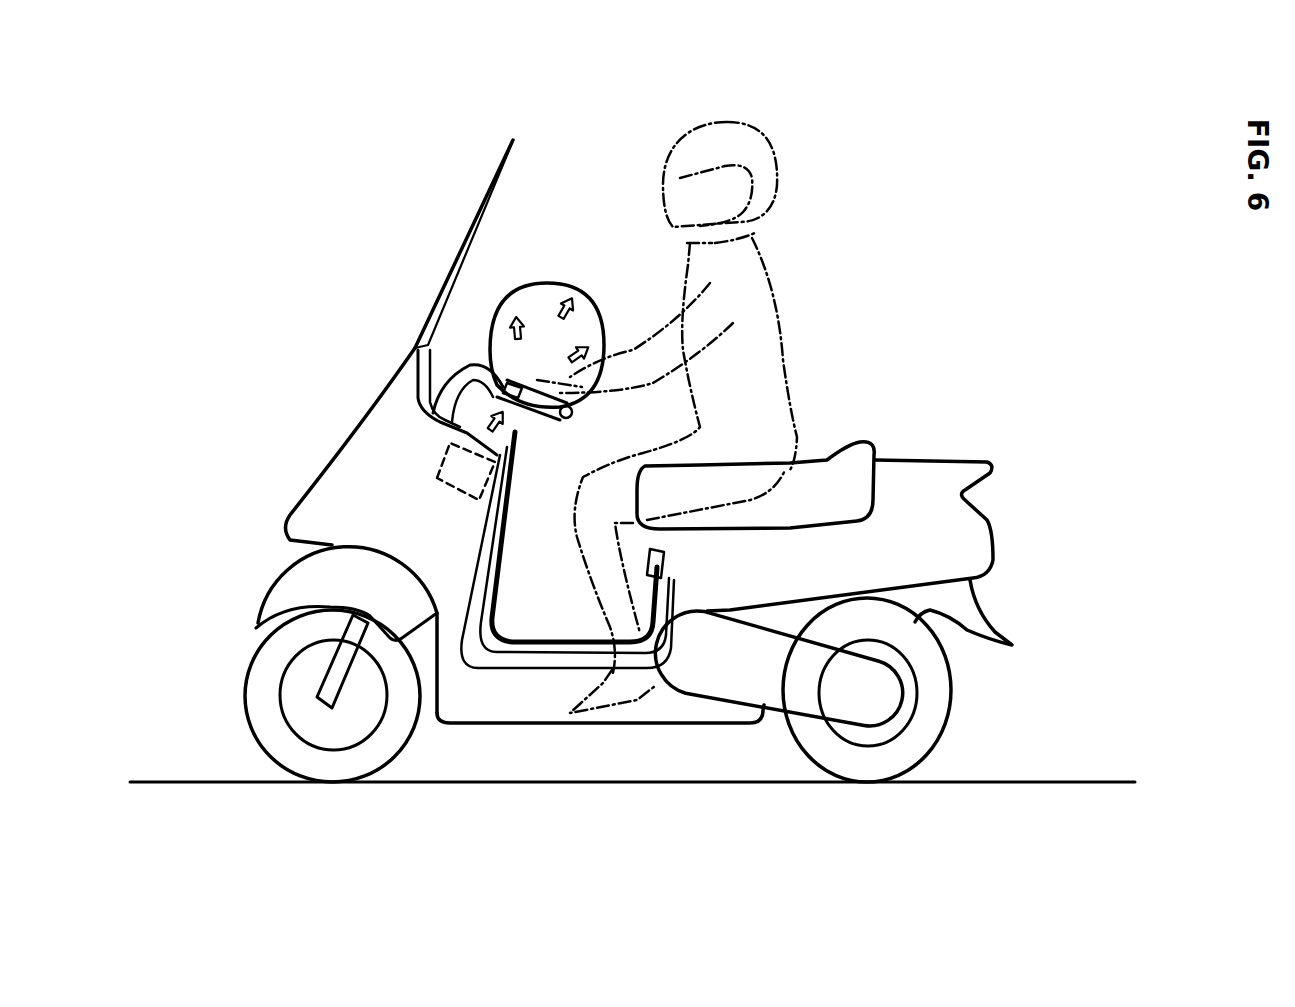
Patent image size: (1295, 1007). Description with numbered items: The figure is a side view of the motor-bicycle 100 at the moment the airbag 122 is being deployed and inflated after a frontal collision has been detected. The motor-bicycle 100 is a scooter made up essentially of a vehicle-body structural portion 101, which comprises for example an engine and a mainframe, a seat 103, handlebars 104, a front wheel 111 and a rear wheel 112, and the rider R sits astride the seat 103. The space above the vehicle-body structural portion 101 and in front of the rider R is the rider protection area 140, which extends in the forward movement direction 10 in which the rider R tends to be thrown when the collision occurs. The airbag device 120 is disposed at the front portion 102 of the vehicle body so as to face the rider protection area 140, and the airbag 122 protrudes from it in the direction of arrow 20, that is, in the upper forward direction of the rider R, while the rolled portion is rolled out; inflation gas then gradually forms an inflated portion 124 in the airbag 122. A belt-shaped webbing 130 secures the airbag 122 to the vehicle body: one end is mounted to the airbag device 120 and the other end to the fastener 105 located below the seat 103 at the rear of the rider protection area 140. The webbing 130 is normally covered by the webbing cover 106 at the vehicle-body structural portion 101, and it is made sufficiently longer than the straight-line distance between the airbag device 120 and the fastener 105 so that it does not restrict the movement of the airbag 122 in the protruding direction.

The forward movement direction 10 is at (696, 80).
The deployment direction of the airbag 20 is at (568, 203).
The motor-bicycle 100 is at (888, 267).
The vehicle-body structural portion 101 is at (701, 738).
The front portion of the vehicle body 102 is at (417, 437).
The seat 103 is at (880, 437).
The handlebars 104 is at (477, 363).
The fastener 105 is at (665, 560).
The webbing cover 106 is at (503, 636).
The front wheel 111 is at (350, 767).
The rear wheel 112 is at (860, 763).
The airbag device 120 is at (421, 455).
The airbag 122 is at (483, 306).
The inflated portion 124 is at (530, 283).
The webbing 130 is at (541, 660).
The rider protection area 140 is at (565, 151).
The rider R is at (765, 378).